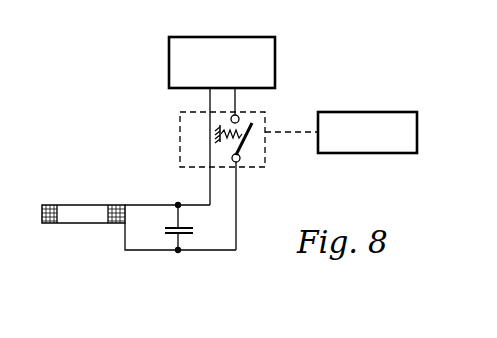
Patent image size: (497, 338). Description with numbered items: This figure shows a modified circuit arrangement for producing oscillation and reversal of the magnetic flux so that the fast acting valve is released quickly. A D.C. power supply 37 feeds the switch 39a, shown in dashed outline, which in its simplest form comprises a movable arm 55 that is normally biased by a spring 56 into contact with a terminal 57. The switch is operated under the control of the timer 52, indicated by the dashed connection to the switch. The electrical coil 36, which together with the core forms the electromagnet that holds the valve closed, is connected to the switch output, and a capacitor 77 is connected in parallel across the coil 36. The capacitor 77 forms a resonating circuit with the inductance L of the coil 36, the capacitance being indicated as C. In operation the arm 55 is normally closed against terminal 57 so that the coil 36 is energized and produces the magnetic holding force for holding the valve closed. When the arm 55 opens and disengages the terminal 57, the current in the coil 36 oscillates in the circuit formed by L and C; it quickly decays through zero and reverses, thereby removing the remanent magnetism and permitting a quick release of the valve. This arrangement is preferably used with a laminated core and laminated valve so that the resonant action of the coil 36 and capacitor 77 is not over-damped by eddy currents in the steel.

The D.C. power supply 37 is at (275, 52).
The switch 39a is at (181, 138).
The terminal 57 is at (239, 116).
The spring 56 is at (243, 131).
The movable arm 55 is at (244, 142).
The timer 52 is at (358, 112).
The electrical coil 36 is at (45, 205).
The capacitor 77 is at (184, 226).
The inductance L is at (117, 203).
The capacitance C is at (190, 232).